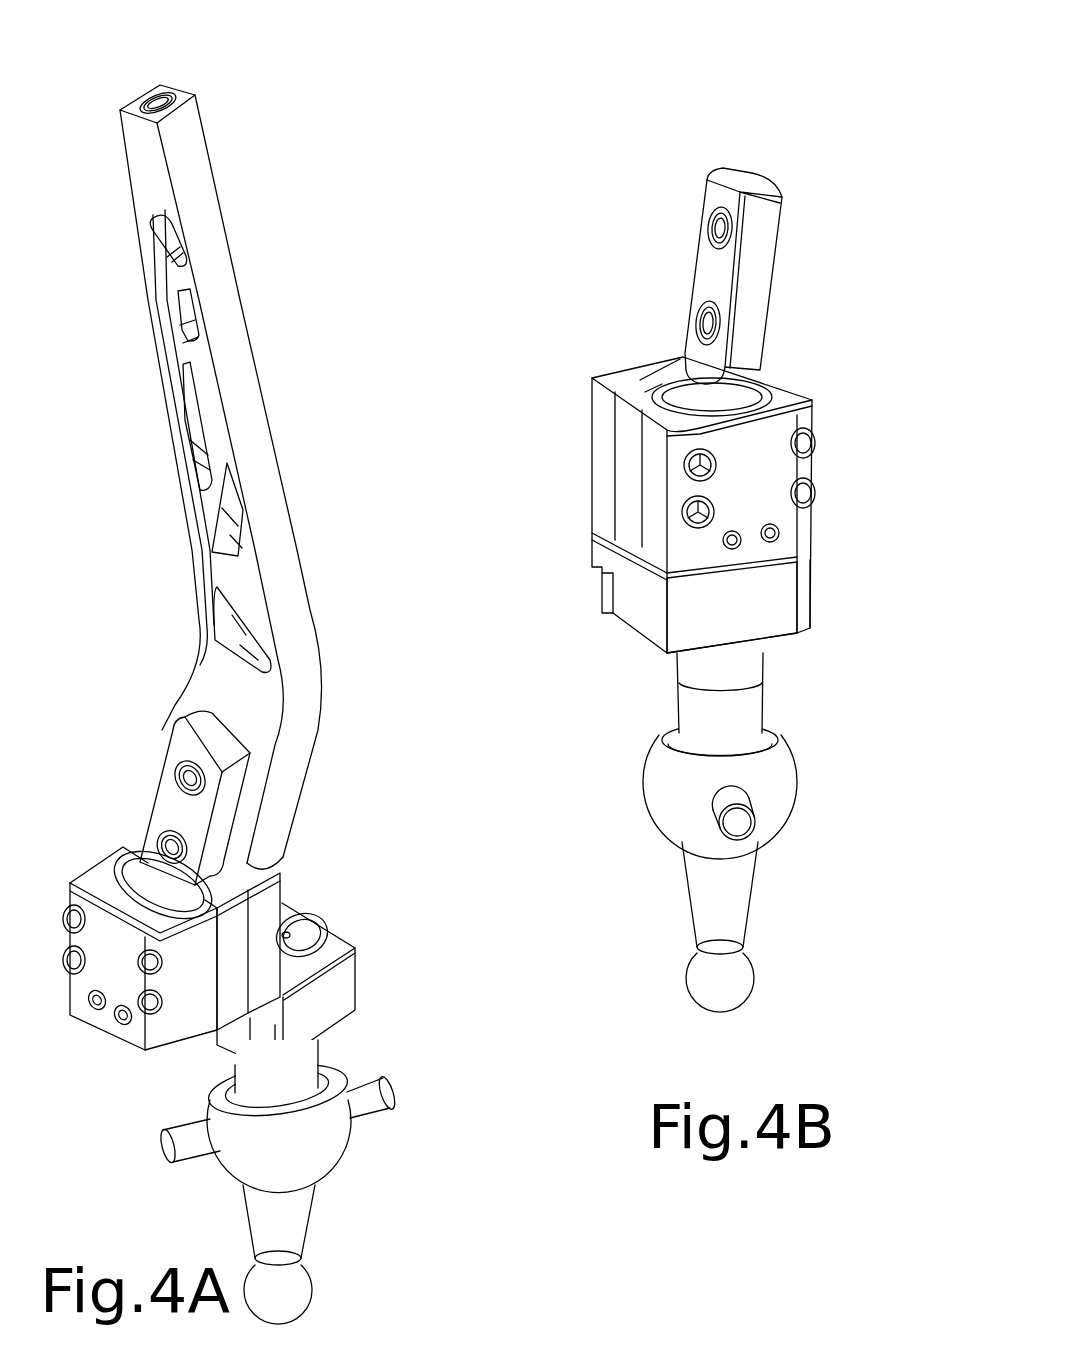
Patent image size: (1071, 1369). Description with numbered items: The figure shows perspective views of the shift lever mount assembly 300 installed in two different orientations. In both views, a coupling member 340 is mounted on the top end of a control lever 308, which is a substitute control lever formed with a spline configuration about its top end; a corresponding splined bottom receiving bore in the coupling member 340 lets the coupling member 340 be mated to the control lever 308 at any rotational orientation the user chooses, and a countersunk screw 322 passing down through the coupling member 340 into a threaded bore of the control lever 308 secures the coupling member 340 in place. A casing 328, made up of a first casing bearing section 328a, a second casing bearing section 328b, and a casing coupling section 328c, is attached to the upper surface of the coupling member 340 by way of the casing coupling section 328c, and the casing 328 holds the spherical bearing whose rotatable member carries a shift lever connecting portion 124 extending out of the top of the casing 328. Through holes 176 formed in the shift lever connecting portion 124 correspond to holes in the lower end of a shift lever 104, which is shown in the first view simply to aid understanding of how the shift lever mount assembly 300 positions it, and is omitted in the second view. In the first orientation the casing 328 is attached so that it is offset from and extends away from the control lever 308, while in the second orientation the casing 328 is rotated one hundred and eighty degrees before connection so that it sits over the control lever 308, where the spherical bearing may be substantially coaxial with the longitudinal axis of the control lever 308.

In FIG. 4A, the shift lever 104 is at (192, 220).
In FIG. 4A, the shift lever mount assembly 300 is at (345, 375).
In FIG. 4B, the shift lever mount assembly 300 is at (792, 167).
In FIG. 4A, the shift lever connecting portion 124 is at (180, 712).
In FIG. 4B, the shift lever connecting portion 124 is at (780, 233).
In FIG. 4A, the through holes 176 is at (183, 837).
In FIG. 4B, the through holes 176 is at (707, 307).
In FIG. 4A, the casing 328 is at (97, 790).
In FIG. 4B, the casing 328 is at (617, 340).
In FIG. 4A, the first casing bearing section 328a is at (93, 860).
In FIG. 4B, the first casing bearing section 328a is at (787, 400).
In FIG. 4A, the second casing bearing section 328b is at (112, 853).
In FIG. 4B, the second casing bearing section 328b is at (642, 398).
In FIG. 4A, the casing coupling section 328c is at (267, 900).
In FIG. 4B, the casing coupling section 328c is at (615, 380).
In FIG. 4A, the countersunk screw 322 is at (297, 928).
In FIG. 4A, the coupling member 340 is at (330, 932).
In FIG. 4B, the coupling member 340 is at (783, 603).
In FIG. 4A, the control lever 308 is at (312, 1045).
In FIG. 4B, the control lever 308 is at (743, 677).